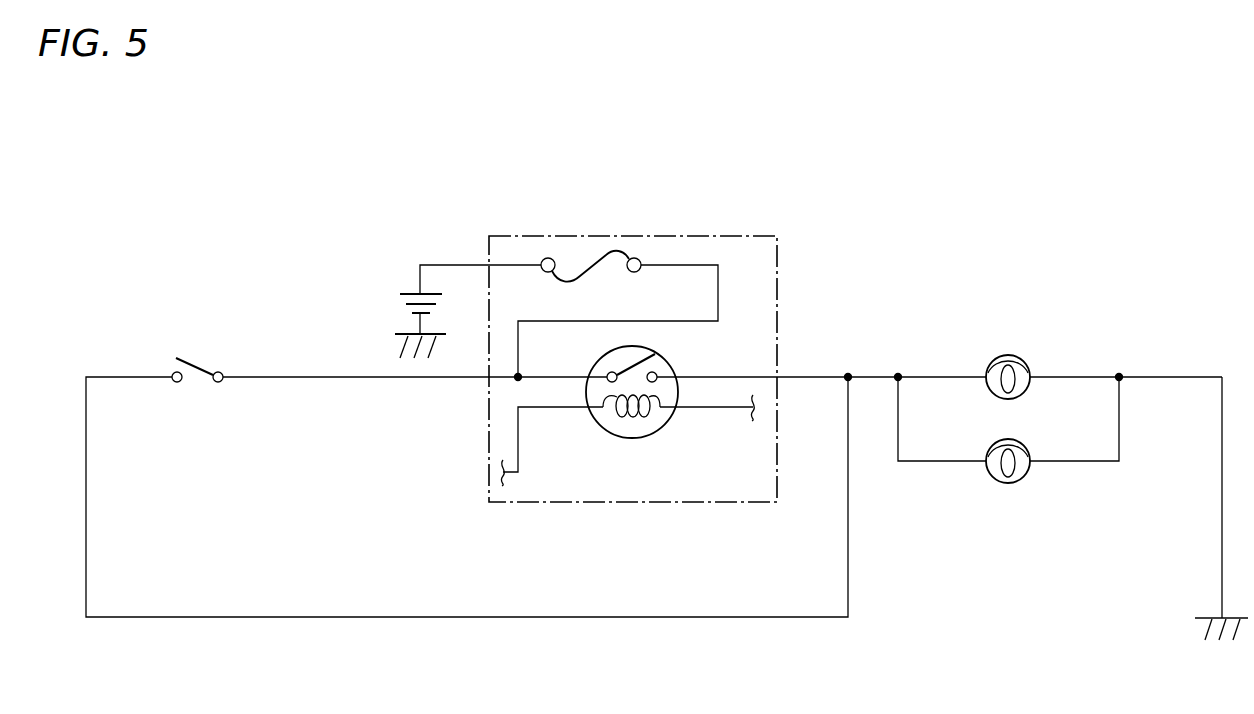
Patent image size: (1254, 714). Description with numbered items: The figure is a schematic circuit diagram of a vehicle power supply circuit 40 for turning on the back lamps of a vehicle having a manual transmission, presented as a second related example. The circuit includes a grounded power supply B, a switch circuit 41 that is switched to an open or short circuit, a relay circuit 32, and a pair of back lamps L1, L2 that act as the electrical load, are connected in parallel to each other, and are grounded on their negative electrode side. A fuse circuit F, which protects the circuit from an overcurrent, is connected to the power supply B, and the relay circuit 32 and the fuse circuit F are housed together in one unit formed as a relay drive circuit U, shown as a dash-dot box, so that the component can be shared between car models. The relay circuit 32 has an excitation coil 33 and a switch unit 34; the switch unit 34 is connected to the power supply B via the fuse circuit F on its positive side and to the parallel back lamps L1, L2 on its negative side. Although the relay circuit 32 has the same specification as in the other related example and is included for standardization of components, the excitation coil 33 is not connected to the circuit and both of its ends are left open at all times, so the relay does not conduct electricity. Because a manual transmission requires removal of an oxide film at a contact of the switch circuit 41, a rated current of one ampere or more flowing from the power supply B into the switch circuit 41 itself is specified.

The vehicle power supply circuit 40 is at (268, 200).
The switch circuit 41 is at (198, 367).
The power supply B is at (416, 294).
The relay drive circuit U is at (645, 236).
The fuse circuit F is at (586, 270).
The relay circuit 32 is at (815, 178).
The switch unit 34 is at (636, 361).
The excitation coil 33 is at (652, 397).
The back lamp L1 is at (1010, 356).
The back lamp L2 is at (1010, 483).